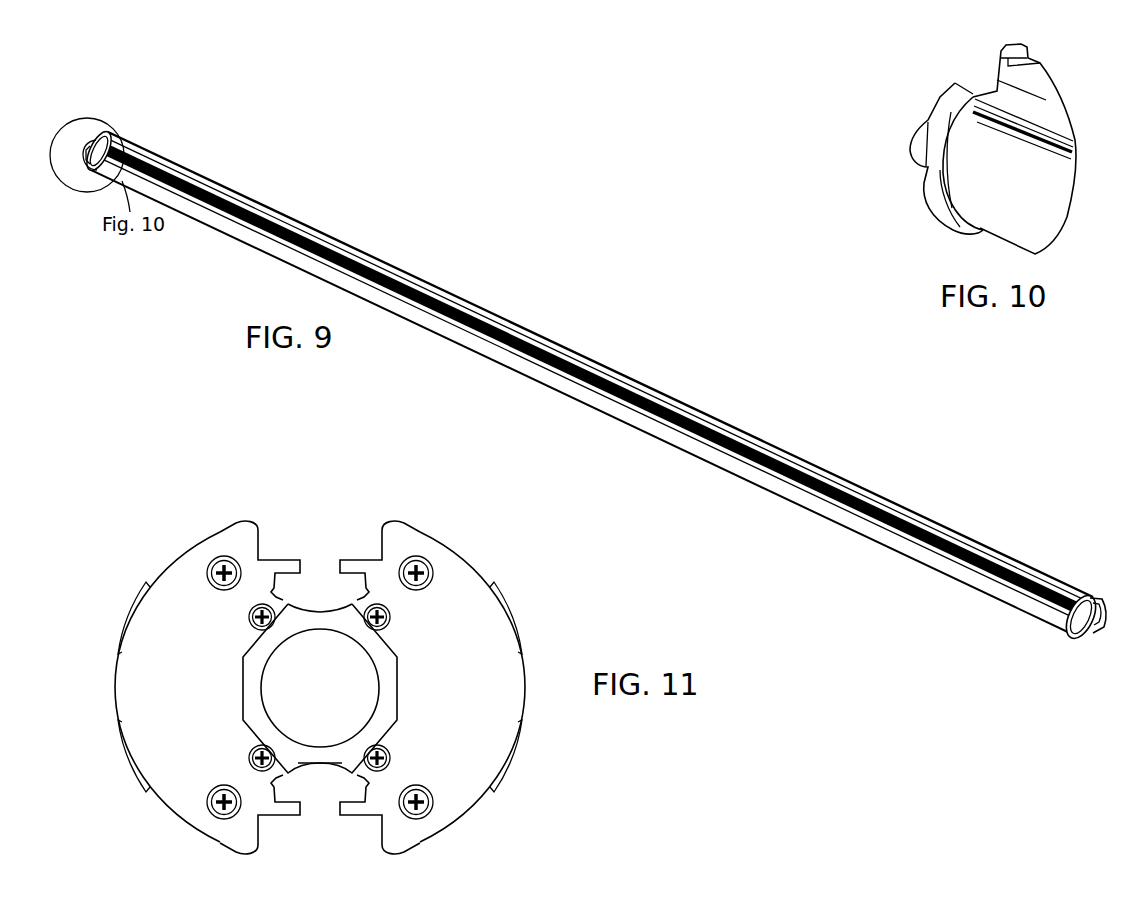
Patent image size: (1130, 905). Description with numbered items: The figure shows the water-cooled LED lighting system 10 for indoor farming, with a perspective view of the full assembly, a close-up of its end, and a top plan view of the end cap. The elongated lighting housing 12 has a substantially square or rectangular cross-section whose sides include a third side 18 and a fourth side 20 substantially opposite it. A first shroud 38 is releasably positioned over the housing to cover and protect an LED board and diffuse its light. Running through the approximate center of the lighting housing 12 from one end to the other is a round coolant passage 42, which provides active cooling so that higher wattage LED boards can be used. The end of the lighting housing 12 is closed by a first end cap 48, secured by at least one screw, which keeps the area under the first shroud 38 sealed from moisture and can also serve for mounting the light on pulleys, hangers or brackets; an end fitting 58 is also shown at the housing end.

In FIG. 9, the lighting system 10 is at (498, 297).
In FIG. 9, the lighting housing 12 is at (333, 230).
In FIG. 11, the lighting housing 12 is at (303, 609).
In FIG. 11, the third side 18 is at (322, 764).
In FIG. 11, the fourth side 20 is at (328, 608).
In FIG. 9, the first shroud 38 is at (457, 330).
In FIG. 10, the first shroud 38 is at (1030, 198).
In FIG. 11, the coolant passage 42 is at (331, 699).
In FIG. 10, the first end cap 48 is at (923, 193).
In FIG. 11, the first end cap 48 is at (452, 616).
In FIG. 9, the end fitting 58 is at (1069, 640).